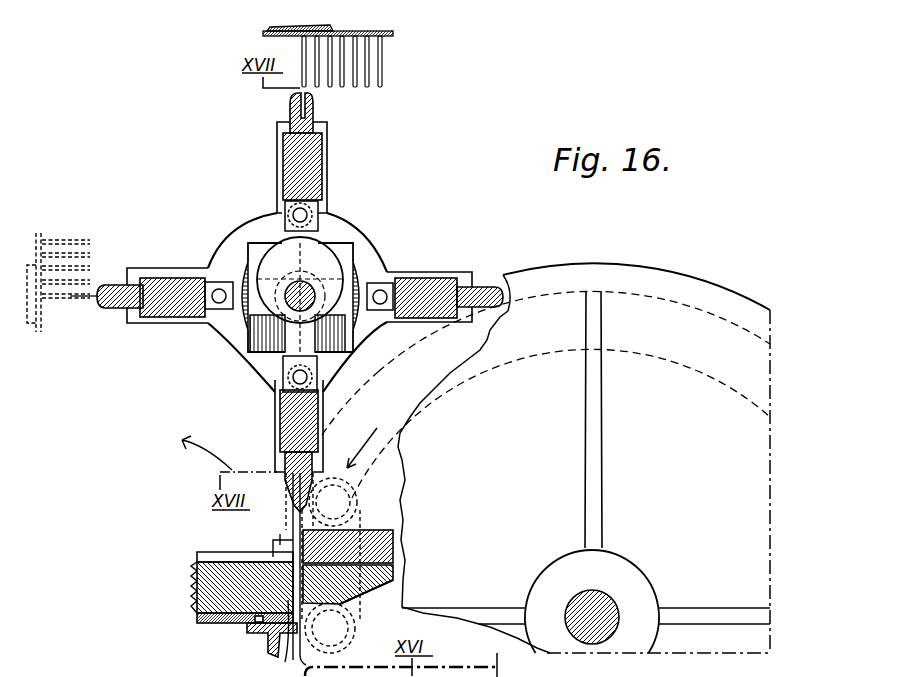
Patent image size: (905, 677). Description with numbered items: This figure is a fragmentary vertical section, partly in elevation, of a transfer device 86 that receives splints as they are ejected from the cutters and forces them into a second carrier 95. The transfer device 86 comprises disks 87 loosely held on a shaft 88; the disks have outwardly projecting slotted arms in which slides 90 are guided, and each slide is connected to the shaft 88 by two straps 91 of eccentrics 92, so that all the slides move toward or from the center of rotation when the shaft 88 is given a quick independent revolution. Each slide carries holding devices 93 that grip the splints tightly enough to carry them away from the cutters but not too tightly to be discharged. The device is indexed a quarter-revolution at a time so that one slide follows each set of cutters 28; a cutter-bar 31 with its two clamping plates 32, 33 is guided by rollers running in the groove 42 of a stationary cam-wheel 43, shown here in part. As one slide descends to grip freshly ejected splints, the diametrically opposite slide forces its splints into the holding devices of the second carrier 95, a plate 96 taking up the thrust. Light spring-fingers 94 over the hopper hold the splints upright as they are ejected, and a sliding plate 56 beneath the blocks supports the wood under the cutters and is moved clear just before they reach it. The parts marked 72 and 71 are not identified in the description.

The plate 96 is at (270, 31).
The second carrier 95 is at (393, 36).
The holding devices 93 is at (313, 108).
The slides 90 is at (327, 170).
The straps 91 is at (284, 204).
The transfer device 86 is at (275, 273).
The disks 87 is at (236, 261).
The shaft 88 is at (308, 272).
The eccentrics 92 is at (268, 300).
The cam-wheel 43 is at (684, 273).
The groove 42 is at (420, 381).
The cutter-bar 31 is at (357, 505).
The plate 32 is at (393, 545).
The cutters 28 is at (393, 569).
The plate 33 is at (377, 590).
The spring-fingers 94 is at (280, 534).
The bracket body 72 is at (195, 587).
The bracket base 71 is at (203, 625).
The sliding plate 56 is at (273, 638).